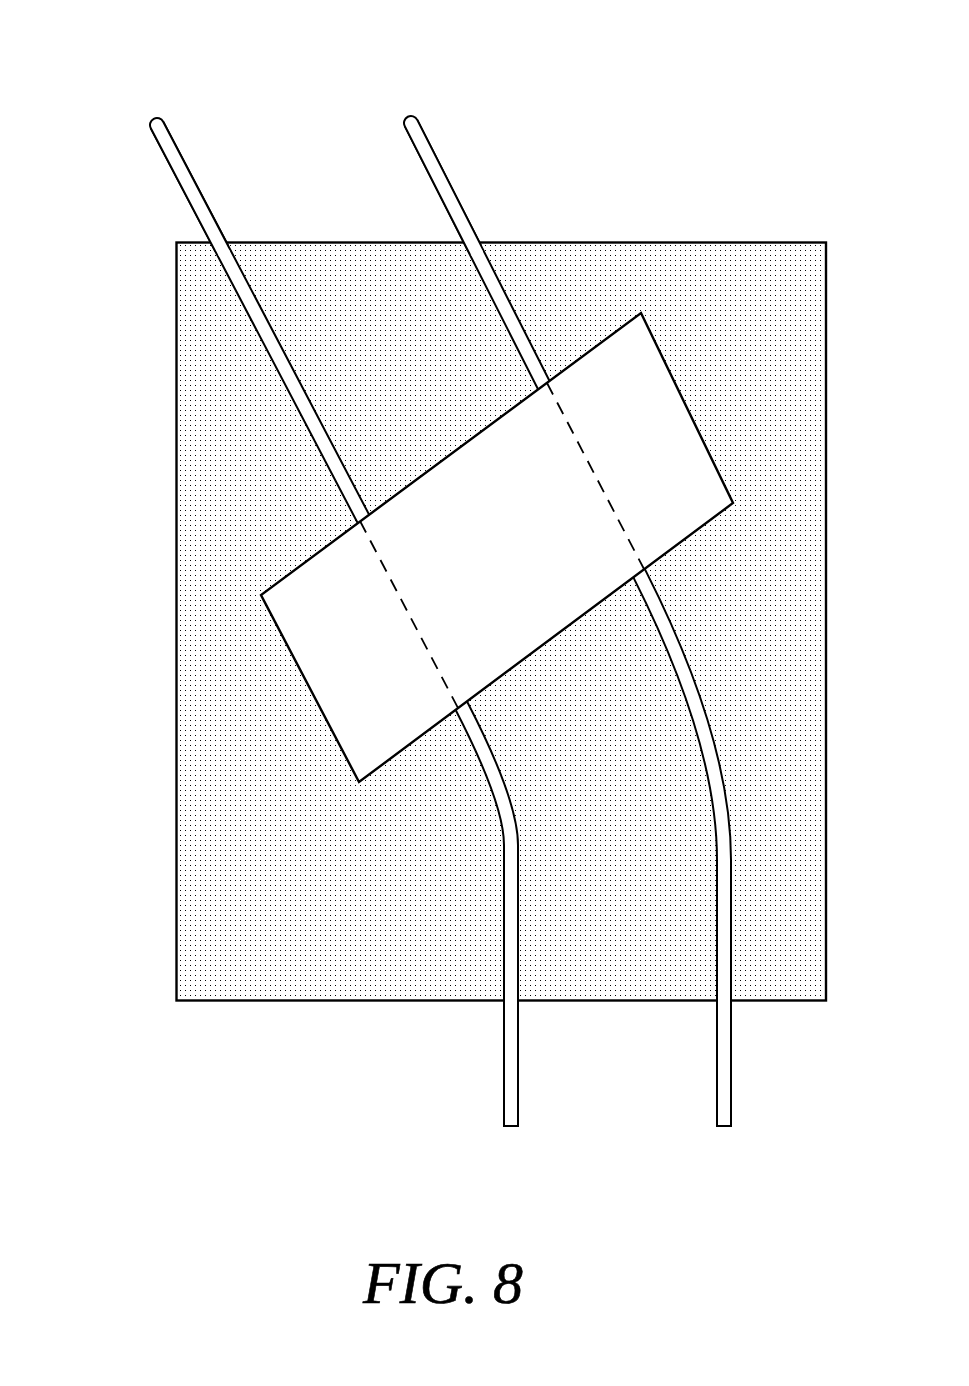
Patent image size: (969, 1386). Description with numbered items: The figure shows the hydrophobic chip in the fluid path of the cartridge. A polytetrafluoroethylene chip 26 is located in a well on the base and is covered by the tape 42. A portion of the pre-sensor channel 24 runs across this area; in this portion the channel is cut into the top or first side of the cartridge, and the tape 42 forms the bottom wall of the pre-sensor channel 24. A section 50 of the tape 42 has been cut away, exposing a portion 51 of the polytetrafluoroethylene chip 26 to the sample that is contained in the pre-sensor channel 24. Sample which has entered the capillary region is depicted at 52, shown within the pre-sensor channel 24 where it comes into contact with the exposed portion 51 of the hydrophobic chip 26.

The pre-sensor channel 24 is at (312, 220).
The polytetrafluoroethylene chip 26 is at (176, 958).
The tape 42 is at (263, 833).
The section 50 is at (330, 642).
The exposed portion of the polytetrafluoroethylene chip 51 is at (433, 520).
The sample 52 is at (182, 157).